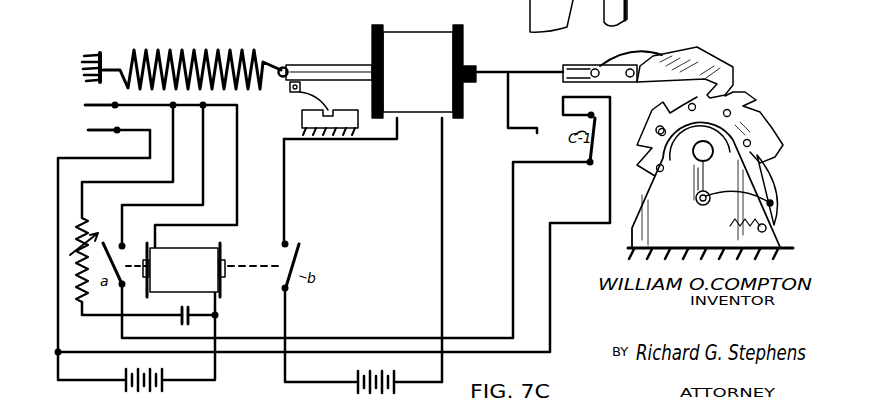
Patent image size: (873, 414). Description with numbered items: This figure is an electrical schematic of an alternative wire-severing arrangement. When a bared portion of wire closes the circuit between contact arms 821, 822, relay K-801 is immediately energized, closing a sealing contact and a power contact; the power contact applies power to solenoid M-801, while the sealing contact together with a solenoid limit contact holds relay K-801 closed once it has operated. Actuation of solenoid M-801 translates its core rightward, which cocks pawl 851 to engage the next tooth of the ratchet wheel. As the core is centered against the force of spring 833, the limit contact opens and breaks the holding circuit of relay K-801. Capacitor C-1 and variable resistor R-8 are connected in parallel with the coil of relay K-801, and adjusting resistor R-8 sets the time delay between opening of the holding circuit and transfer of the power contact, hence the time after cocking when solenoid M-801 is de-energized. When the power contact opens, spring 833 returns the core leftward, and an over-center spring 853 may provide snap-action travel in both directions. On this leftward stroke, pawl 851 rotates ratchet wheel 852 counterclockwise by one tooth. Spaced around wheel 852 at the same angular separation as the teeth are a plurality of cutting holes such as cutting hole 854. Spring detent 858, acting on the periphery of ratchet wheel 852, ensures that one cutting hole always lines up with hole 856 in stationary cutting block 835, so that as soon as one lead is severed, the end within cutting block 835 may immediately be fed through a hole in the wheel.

The spring 833 is at (221, 50).
The contact arm 821 is at (86, 105).
The contact arm 822 is at (90, 132).
The spring 853 is at (291, 97).
The solenoid M-801 is at (436, 14).
The variable resistor R-8 is at (97, 225).
The relay K-801 is at (209, 241).
The capacitor C-1 is at (181, 313).
The pawl 851 is at (700, 50).
The ratchet wheel 852 is at (752, 102).
The cutting hole 854 is at (658, 128).
The spring detent 858 is at (772, 173).
The hole 856 is at (772, 203).
The stationary cutting block 835 is at (630, 237).